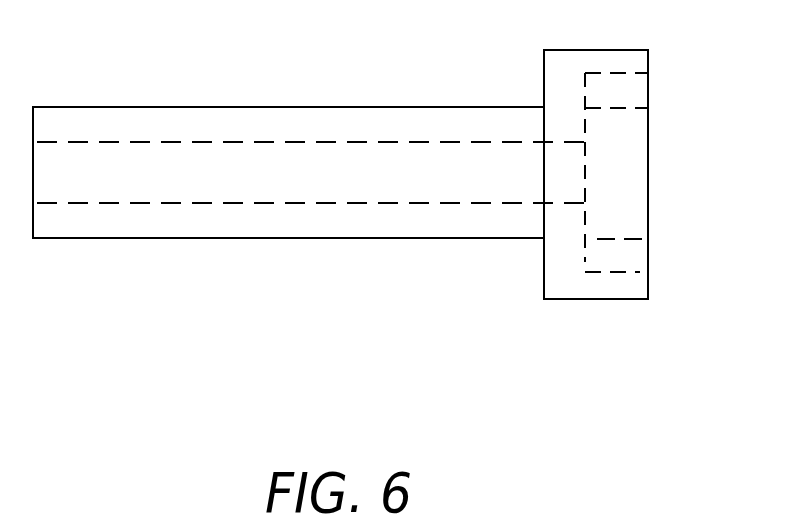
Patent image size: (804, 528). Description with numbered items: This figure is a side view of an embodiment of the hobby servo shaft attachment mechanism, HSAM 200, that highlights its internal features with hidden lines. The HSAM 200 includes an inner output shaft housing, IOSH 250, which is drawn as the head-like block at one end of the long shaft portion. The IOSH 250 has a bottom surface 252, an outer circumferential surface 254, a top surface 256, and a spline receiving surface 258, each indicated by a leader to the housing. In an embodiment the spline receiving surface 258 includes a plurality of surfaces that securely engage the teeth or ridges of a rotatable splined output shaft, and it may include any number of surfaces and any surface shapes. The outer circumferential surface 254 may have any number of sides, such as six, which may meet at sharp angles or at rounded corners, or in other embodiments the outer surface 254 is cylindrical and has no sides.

The hobby servo shaft attachment mechanism 200 is at (222, 335).
The inner output shaft housing 250 is at (670, 238).
The bottom surface 252 is at (648, 88).
The outer circumferential surface 254 is at (610, 255).
The top surface 256 is at (583, 253).
The spline receiving surface 258 is at (607, 98).